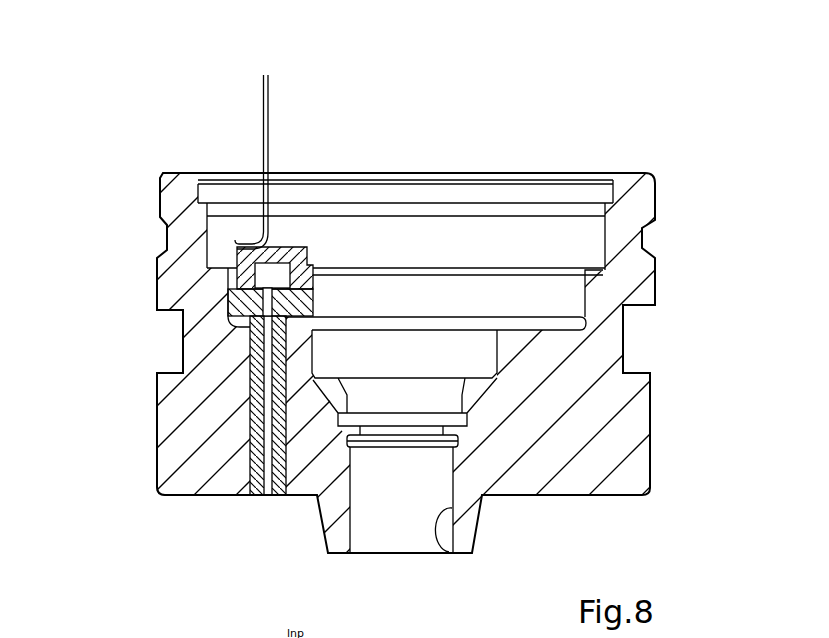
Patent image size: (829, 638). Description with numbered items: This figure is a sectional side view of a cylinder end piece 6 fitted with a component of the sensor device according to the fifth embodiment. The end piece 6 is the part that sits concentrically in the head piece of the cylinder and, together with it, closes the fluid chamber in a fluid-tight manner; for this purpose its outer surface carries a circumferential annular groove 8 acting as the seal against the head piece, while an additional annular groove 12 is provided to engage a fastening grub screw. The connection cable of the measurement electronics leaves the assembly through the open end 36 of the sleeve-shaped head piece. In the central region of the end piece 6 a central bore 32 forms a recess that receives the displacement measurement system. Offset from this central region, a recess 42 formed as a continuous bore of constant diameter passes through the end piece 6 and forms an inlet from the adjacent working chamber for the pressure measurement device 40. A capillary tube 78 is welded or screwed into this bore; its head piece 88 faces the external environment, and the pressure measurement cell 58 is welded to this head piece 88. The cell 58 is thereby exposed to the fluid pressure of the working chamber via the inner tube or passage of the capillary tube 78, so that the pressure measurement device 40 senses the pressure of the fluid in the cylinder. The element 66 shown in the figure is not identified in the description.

The cylinder end piece 6 is at (613, 410).
The circumferential annular groove 8 is at (167, 311).
The additional annular groove 12 is at (163, 222).
The central bore 32 is at (449, 552).
The open end 36 is at (193, 173).
The pressure measurement device 40 is at (158, 332).
The recess 42 is at (262, 404).
The pressure measurement cell 58 is at (300, 254).
The actuating rod 66 is at (268, 118).
The capillary tube 78 is at (268, 442).
The head piece 88 is at (293, 299).